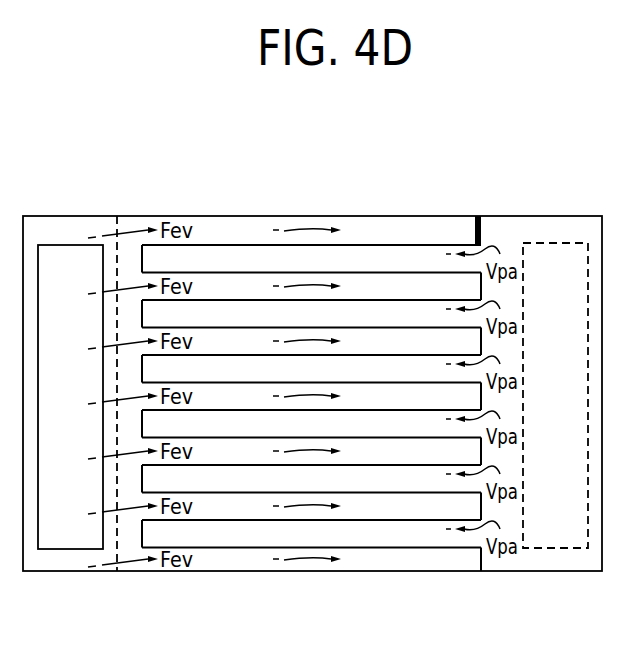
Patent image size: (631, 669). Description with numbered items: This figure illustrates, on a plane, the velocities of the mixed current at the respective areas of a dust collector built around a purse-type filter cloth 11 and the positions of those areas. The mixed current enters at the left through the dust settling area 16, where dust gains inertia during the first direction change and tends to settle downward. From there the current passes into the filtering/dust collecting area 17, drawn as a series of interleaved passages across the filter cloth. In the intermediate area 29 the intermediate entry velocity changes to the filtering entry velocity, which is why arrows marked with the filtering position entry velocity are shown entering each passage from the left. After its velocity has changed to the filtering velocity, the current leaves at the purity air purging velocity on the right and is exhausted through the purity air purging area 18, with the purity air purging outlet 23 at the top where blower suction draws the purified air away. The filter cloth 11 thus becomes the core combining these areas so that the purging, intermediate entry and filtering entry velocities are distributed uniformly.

The purse-type filter cloth 11 is at (290, 557).
The dust settling area 16 is at (119, 237).
The filtering/dust collecting area 17 is at (225, 357).
The purity air purging area 18 is at (550, 250).
The purity air purging outlet 23 is at (473, 187).
The intermediate area 29 is at (360, 342).